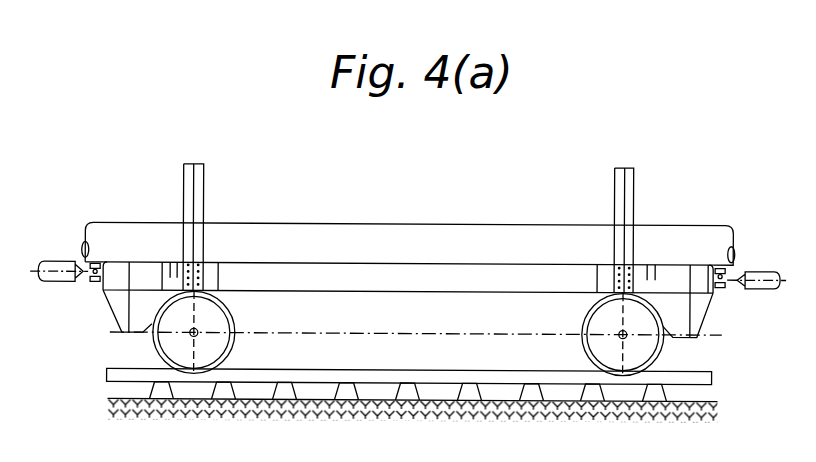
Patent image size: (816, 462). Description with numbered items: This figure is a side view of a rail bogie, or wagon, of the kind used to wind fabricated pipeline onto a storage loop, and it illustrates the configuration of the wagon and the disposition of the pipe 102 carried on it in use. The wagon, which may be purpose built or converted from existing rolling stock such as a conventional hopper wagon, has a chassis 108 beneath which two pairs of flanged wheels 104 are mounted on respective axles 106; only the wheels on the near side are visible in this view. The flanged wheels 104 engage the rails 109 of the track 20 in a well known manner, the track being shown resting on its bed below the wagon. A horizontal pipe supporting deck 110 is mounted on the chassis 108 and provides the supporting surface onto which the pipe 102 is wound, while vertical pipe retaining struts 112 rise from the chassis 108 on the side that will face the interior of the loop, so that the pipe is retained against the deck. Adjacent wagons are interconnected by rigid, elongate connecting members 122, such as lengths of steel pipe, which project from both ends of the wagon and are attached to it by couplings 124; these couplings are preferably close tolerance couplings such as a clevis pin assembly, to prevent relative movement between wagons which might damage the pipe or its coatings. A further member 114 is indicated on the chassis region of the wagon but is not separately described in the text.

The track 20 is at (732, 391).
The pipe 102 is at (465, 225).
The flanged wheels 104 is at (237, 313).
The axles 106 is at (198, 335).
The chassis 108 is at (353, 282).
The rails 109 is at (413, 369).
The pipe supporting deck 110 is at (410, 263).
The pipe retaining struts 112 is at (190, 165).
The frame member 114 is at (540, 268).
The connecting members 122 is at (47, 276).
The couplings 124 is at (93, 283).